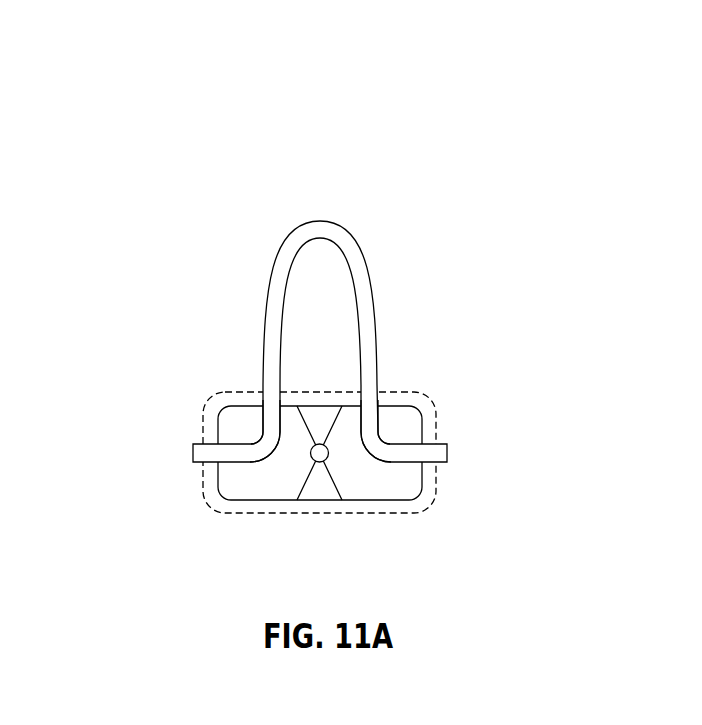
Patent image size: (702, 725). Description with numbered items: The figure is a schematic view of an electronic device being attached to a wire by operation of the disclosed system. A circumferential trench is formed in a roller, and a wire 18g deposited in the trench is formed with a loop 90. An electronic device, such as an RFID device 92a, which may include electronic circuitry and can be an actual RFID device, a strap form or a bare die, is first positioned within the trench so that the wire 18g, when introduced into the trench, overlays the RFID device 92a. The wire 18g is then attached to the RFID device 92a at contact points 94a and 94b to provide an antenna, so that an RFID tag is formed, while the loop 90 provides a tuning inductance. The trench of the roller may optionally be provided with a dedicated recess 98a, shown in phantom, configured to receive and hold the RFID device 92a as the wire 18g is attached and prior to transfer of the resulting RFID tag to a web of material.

The wire 18g is at (317, 363).
The loop 90 is at (347, 232).
The RFID device 92a is at (232, 482).
The contact point 94a is at (256, 446).
The contact point 94b is at (377, 440).
The dedicated recess 98a is at (392, 392).